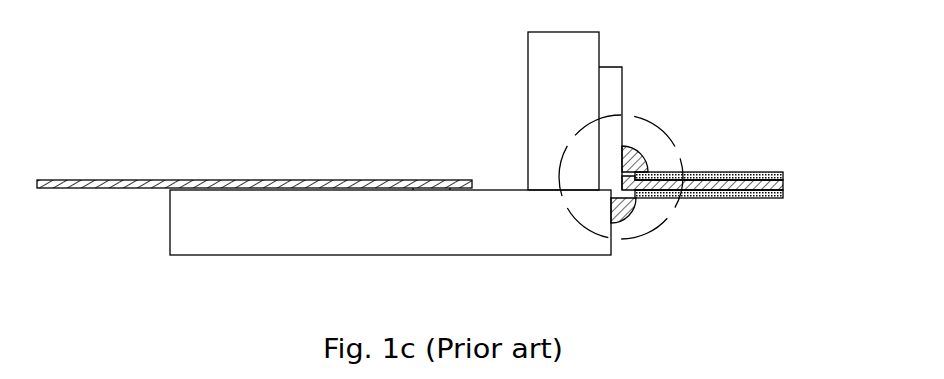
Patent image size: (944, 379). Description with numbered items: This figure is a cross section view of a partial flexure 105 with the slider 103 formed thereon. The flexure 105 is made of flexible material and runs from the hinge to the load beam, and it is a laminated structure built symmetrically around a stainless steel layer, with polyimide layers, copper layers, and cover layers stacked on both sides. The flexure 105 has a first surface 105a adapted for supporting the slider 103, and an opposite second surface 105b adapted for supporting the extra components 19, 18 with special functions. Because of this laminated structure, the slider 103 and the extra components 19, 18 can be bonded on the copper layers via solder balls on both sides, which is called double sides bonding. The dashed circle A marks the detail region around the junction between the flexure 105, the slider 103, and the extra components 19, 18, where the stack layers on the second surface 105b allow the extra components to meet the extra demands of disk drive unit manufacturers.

The extra component 18 is at (584, 60).
The extra component 19 is at (614, 88).
The slider 103 is at (552, 240).
The flexure 105 is at (797, 186).
The first surface 105a is at (730, 213).
The second surface 105b is at (724, 152).
The detail region A is at (621, 176).